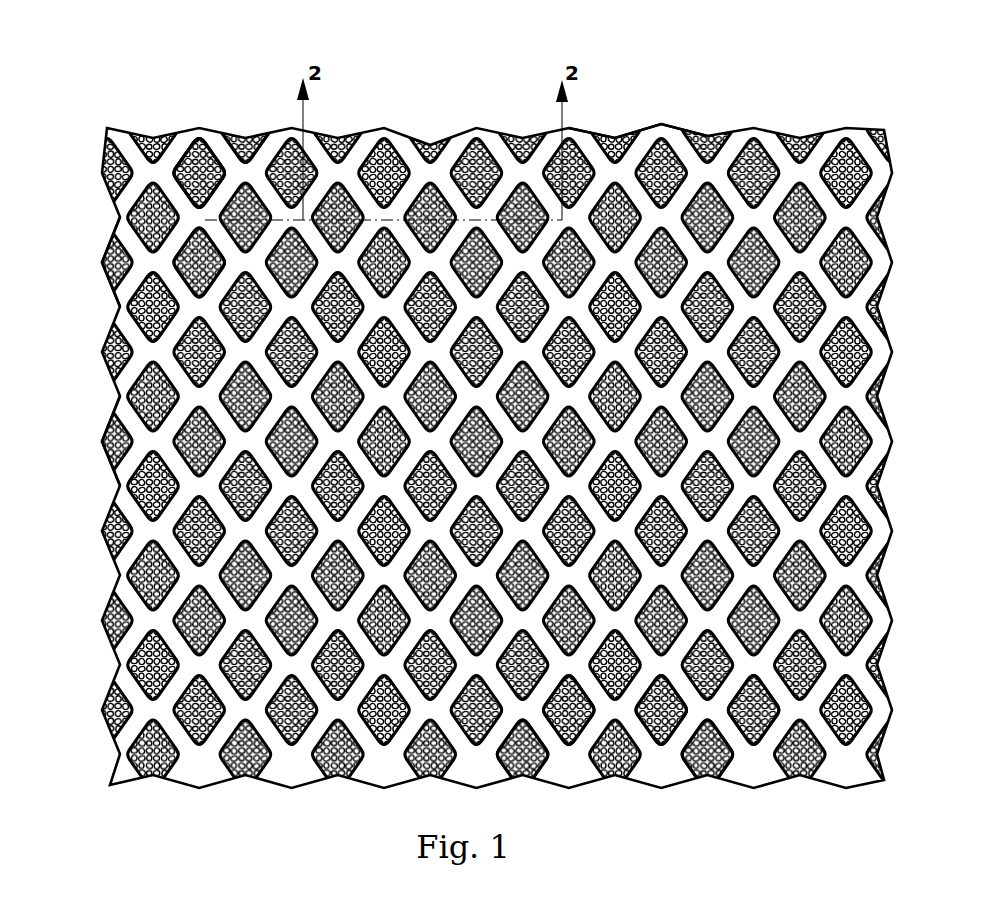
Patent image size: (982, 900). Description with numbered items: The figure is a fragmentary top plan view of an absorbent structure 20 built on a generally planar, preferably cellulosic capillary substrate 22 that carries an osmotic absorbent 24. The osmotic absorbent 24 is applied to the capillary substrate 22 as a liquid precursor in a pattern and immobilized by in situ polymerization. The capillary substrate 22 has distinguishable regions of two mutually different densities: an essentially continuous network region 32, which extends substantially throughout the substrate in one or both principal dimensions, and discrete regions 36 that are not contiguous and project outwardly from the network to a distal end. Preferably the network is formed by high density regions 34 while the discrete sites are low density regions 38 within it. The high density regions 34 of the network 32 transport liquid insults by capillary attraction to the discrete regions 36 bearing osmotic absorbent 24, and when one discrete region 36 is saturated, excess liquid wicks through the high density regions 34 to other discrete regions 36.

The absorbent structure 20 is at (162, 106).
The capillary substrate 22 is at (218, 147).
The osmotic absorbent 24 is at (690, 138).
The essentially continuous network region 32 is at (197, 218).
The high density region 34 is at (125, 417).
The discrete region 36 is at (670, 747).
The low density region 38 is at (567, 692).